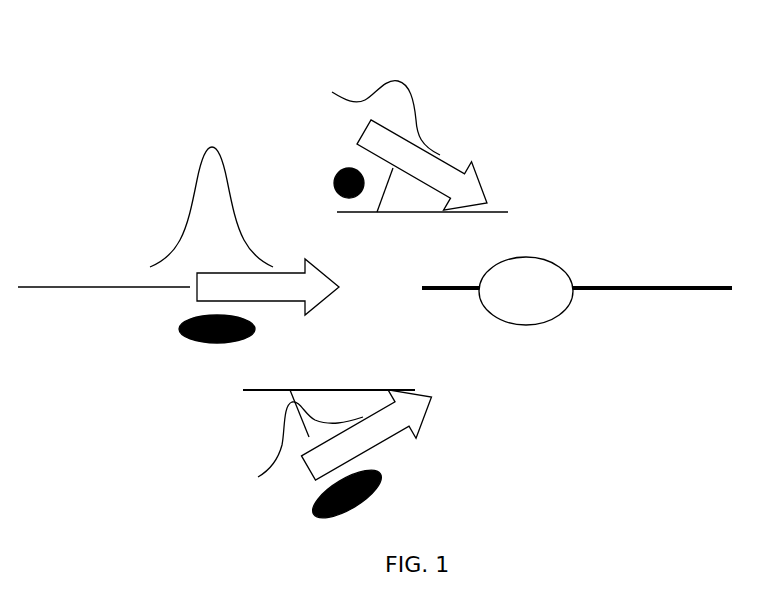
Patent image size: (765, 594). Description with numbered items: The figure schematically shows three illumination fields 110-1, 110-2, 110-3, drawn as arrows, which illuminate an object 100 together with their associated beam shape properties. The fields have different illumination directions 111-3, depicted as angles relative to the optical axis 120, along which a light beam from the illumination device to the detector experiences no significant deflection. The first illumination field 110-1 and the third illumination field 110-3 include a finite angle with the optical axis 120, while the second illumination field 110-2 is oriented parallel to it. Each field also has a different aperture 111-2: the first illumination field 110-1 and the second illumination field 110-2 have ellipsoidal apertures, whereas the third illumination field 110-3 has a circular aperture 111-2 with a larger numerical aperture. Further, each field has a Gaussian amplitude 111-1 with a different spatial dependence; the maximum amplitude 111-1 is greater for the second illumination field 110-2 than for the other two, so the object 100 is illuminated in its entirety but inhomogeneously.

The object 100 is at (539, 258).
The optical axis 120 is at (639, 288).
The first illumination field 110-1 is at (417, 438).
The second illumination field 110-2 is at (324, 277).
The third illumination field 110-3 is at (483, 183).
The amplitude 111-1 is at (174, 193).
The aperture 111-2 is at (165, 324).
The illumination direction 111-3 is at (83, 287).